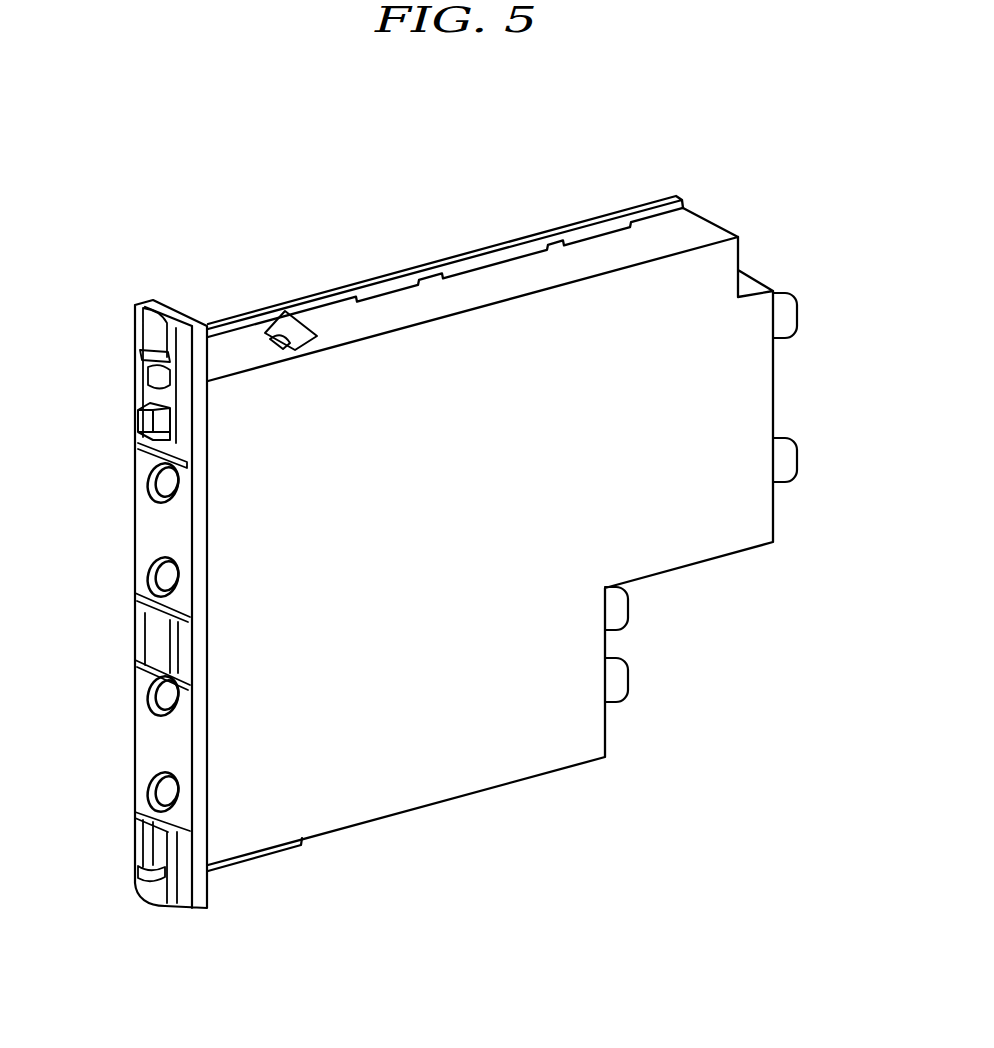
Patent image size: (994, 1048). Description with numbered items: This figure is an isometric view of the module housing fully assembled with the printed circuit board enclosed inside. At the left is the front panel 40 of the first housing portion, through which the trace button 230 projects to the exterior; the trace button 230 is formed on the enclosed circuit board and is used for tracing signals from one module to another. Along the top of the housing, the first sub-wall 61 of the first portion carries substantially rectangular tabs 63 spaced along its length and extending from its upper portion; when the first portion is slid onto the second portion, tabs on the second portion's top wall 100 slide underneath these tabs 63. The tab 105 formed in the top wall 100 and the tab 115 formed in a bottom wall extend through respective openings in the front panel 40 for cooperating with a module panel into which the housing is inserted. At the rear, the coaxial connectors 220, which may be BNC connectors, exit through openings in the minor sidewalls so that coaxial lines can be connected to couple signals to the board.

The front panel 40 is at (186, 897).
The first sub-wall 61 is at (383, 284).
The tabs 63 is at (567, 242).
The top wall 100 is at (698, 228).
The tab 105 is at (248, 328).
The tab 115 is at (257, 851).
The coaxial connectors 220 is at (787, 313).
The trace button 230 is at (138, 417).